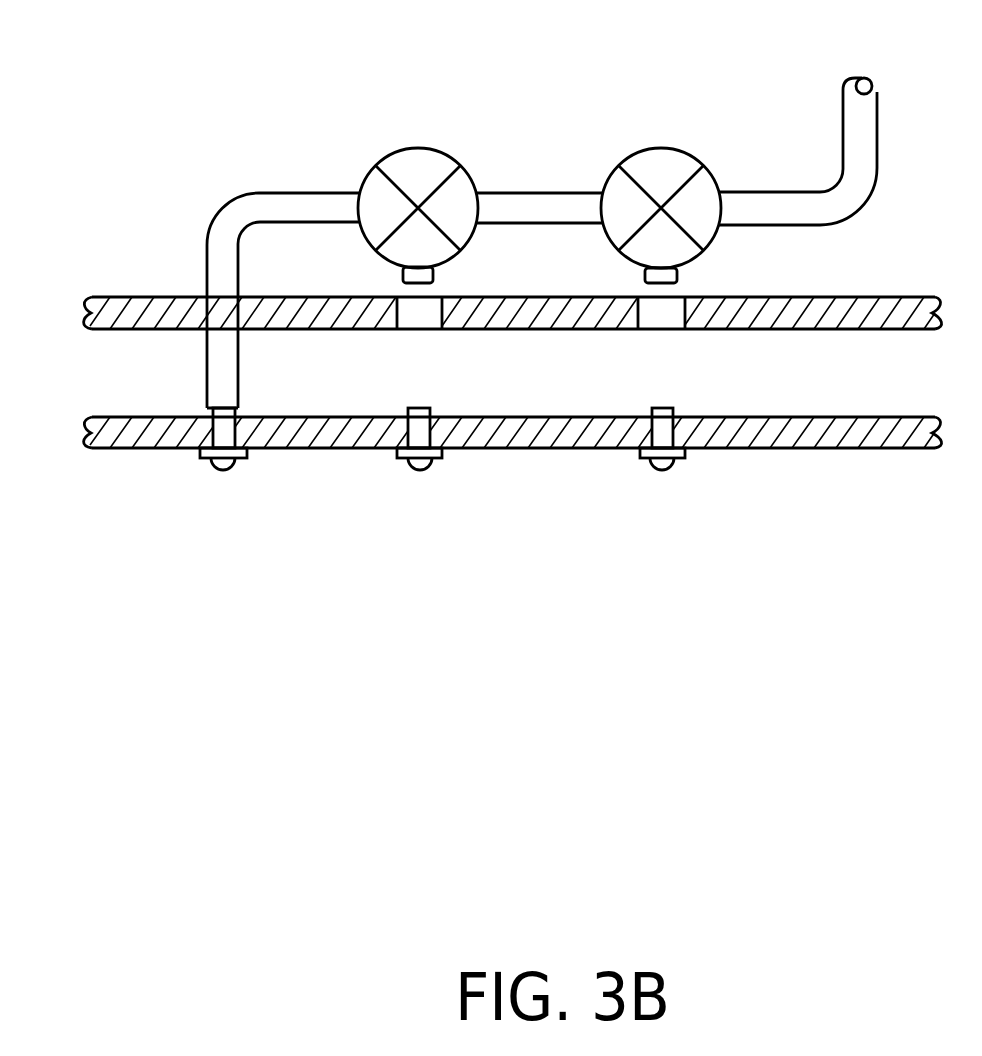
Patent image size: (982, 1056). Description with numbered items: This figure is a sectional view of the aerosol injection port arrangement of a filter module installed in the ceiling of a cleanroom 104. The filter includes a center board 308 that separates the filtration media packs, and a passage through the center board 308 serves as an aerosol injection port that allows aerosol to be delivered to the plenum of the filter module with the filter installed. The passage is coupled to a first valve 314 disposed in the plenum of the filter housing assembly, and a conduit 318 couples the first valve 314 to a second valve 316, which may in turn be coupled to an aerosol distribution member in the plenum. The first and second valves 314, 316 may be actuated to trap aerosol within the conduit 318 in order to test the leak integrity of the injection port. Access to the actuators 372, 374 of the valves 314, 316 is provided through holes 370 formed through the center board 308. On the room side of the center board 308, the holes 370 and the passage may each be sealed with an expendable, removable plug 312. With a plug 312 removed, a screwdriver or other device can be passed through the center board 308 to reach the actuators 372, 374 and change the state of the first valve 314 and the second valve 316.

The cleanroom 104 is at (388, 640).
The center board 308 is at (143, 297).
The plug 312 is at (197, 452).
The first valve 314 is at (418, 147).
The second valve 316 is at (663, 147).
The conduit 318 is at (543, 193).
The holes 370 is at (422, 330).
The actuator 372 is at (403, 278).
The actuator 374 is at (678, 280).